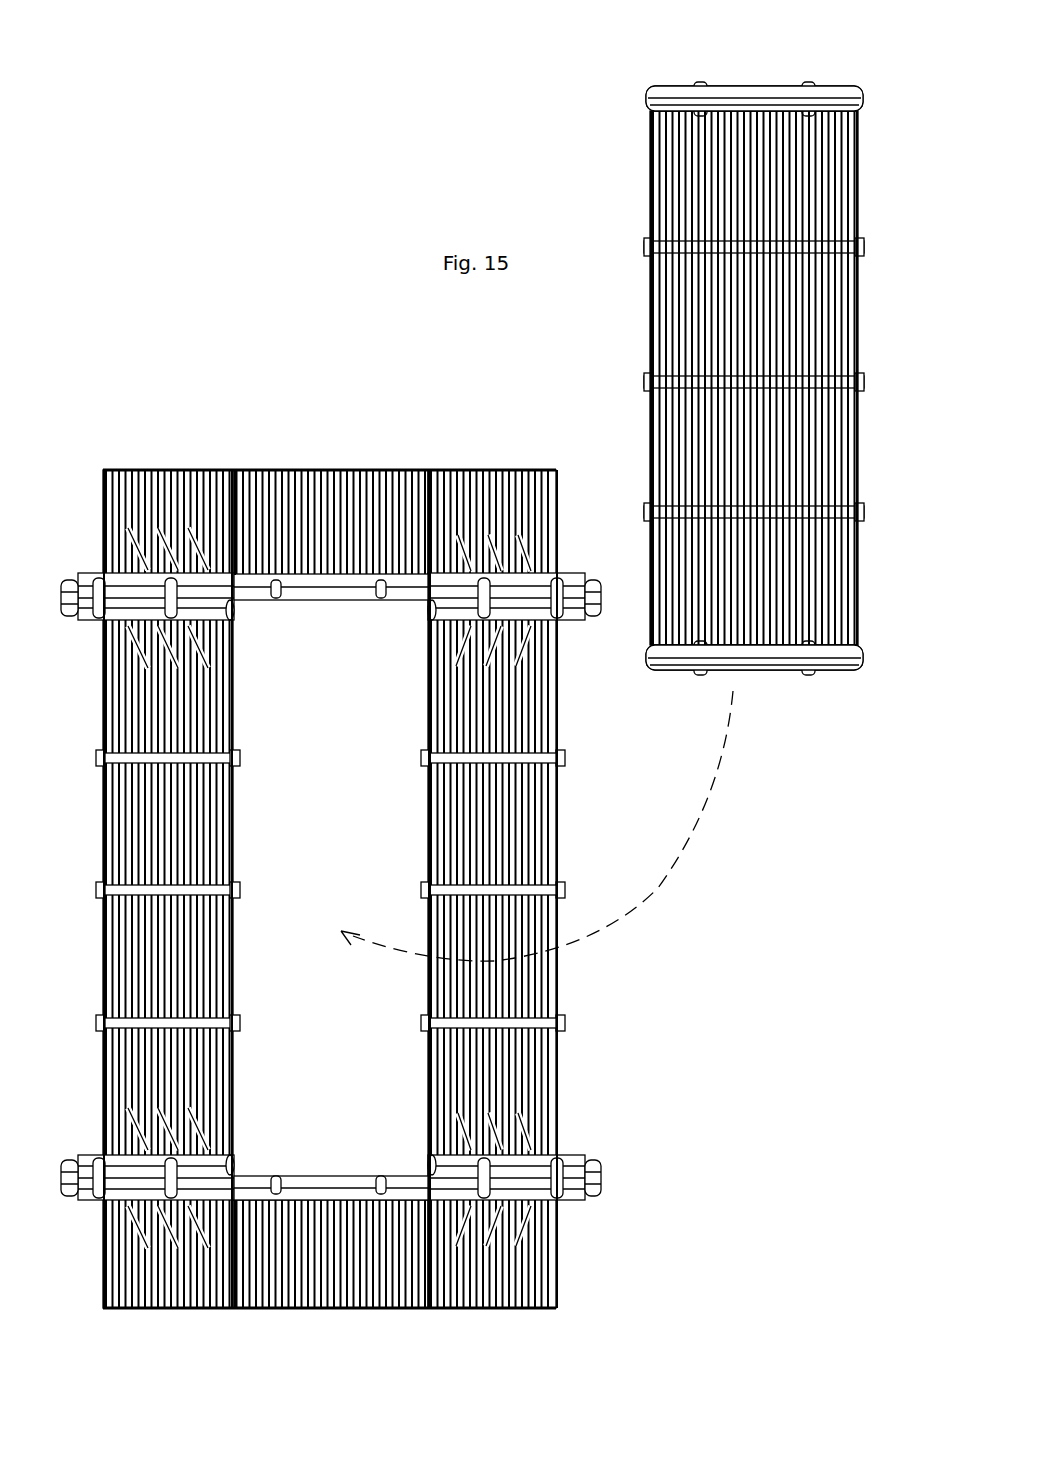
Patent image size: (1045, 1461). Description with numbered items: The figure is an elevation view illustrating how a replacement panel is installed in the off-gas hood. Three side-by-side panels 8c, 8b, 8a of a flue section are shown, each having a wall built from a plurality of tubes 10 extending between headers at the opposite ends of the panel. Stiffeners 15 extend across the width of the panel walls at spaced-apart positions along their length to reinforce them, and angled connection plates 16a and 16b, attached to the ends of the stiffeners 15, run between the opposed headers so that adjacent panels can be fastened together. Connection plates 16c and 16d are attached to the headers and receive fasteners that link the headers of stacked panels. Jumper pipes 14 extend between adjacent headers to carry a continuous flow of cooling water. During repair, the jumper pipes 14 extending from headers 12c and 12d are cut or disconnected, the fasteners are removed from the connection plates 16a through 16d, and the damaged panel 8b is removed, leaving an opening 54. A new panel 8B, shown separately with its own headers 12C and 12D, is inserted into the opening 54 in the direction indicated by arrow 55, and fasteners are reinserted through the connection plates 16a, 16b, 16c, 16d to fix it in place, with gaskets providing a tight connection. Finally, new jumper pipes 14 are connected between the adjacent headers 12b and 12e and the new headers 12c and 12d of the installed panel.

The tubes 10 is at (329, 820).
The panel 8a is at (487, 462).
The damaged panel 8b is at (337, 462).
The panel 8c is at (197, 462).
The new panel 8B is at (668, 318).
The header 12b is at (78, 1200).
The header 12c is at (85, 1150).
The header 12d is at (82, 627).
The header 12e is at (82, 562).
The connector bar 12C is at (665, 662).
The connector bar 12D is at (642, 90).
The jumper pipes 14 is at (52, 592).
The stiffeners 15 is at (458, 750).
The angled connection plate 16a is at (407, 462).
The angled connection plate 16b is at (97, 462).
The connection plate 16c is at (322, 1170).
The connection plate 16d is at (250, 595).
The opening 54 is at (301, 870).
The arrow 55 is at (633, 893).